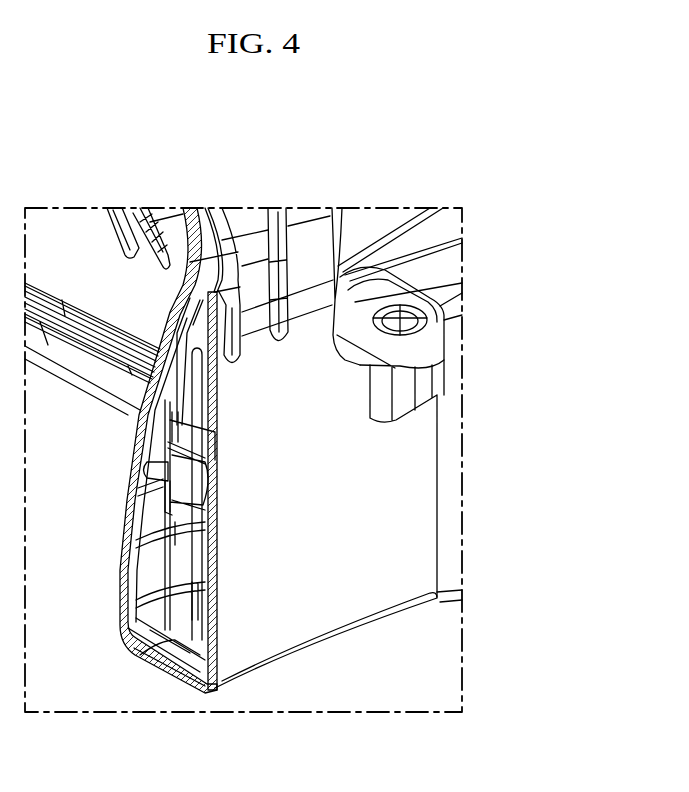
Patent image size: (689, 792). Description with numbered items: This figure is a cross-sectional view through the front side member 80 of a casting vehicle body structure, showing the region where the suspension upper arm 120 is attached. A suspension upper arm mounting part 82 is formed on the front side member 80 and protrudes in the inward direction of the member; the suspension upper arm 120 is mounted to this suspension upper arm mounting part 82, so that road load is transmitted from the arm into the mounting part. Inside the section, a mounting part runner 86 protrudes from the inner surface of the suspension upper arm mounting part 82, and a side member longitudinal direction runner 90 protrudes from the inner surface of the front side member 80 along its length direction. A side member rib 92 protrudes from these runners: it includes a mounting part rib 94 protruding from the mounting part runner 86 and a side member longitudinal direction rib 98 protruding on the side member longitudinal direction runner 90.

The front side member 80 is at (360, 632).
The suspension upper arm mounting part 82 is at (148, 506).
The mounting part runner 86 is at (168, 636).
The side member longitudinal direction runner 90 is at (210, 548).
The side member rib 92 is at (74, 538).
The mounting part rib 94 is at (198, 585).
The side member longitudinal direction rib 98 is at (205, 523).
The suspension upper arm 120 is at (67, 398).